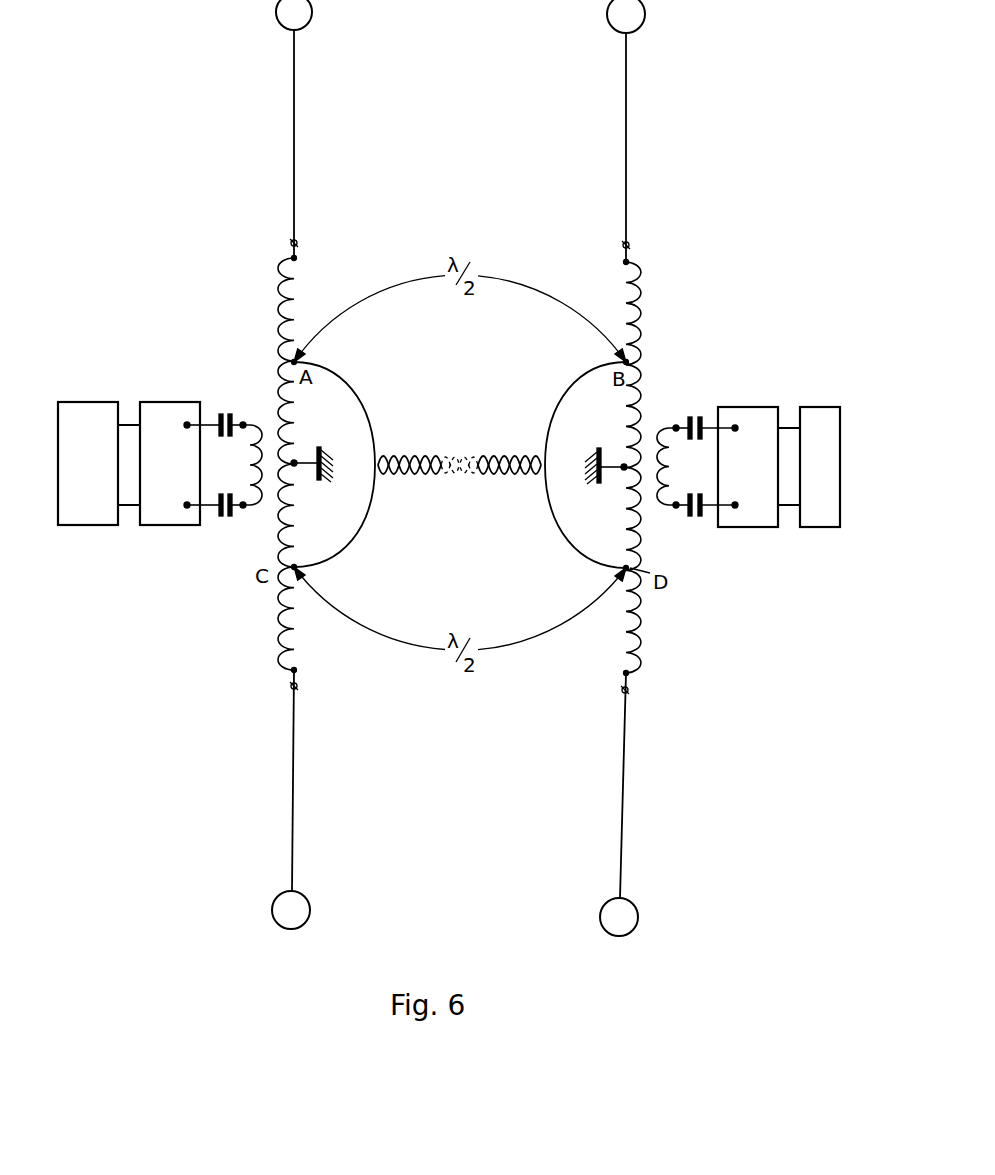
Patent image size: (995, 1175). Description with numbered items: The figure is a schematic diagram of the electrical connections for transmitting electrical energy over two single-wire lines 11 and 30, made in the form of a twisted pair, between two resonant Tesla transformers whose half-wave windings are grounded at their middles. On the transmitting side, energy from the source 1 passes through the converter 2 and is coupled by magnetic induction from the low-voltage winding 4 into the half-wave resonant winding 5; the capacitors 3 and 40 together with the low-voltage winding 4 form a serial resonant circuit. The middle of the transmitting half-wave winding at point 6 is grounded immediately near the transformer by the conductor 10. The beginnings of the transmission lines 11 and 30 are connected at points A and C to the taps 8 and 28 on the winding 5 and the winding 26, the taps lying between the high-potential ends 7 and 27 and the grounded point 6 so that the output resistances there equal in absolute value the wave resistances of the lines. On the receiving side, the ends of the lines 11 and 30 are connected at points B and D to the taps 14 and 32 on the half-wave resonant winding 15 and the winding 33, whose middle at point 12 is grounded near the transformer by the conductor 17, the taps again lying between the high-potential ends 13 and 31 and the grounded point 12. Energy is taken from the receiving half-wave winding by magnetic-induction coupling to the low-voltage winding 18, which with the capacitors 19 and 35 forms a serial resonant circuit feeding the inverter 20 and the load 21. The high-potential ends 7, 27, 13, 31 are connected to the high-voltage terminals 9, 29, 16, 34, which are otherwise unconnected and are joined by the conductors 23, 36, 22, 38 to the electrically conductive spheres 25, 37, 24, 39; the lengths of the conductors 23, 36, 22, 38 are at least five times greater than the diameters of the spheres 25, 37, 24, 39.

The source of energy 1 is at (86, 402).
The converter 2 is at (163, 402).
The capacitor 3 is at (225, 412).
The low-voltage winding 4 is at (250, 510).
The half-wave resonant winding 5 is at (296, 415).
The middle point of half-wave winding 6 is at (310, 455).
The high-potential terminal 7 is at (294, 258).
The tap 8 is at (296, 362).
The high-voltage terminal 9 is at (300, 241).
The grounding conductor 10 is at (305, 466).
The single-wire transmission line 11 is at (370, 400).
The middle point of half-wave winding 12 is at (622, 464).
The high-potential terminal 13 is at (626, 262).
The tap 14 is at (620, 359).
The half-wave resonant winding 15 is at (626, 395).
The high-voltage terminal 16 is at (622, 245).
The grounding conductor 17 is at (618, 470).
The low-voltage winding 18 is at (665, 478).
The capacitor 19 is at (697, 413).
The inverter 20 is at (750, 407).
The load 21 is at (818, 407).
The conductor 22 is at (624, 130).
The conductor 23 is at (296, 127).
The electrically conductive sphere 24 is at (612, 28).
The electrically conductive sphere 25 is at (311, 26).
The winding 26 is at (290, 565).
The high-potential terminal 27 is at (294, 668).
The tap 28 is at (300, 572).
The high-voltage terminal 29 is at (298, 688).
The single-wire transmission line 30 is at (352, 553).
The high-potential terminal 31 is at (622, 672).
The tap 32 is at (616, 578).
The winding 33 is at (626, 547).
The high-voltage terminal 34 is at (620, 691).
The capacitor 35 is at (697, 520).
The conductor 36 is at (294, 772).
The electrically conductive sphere 37 is at (306, 894).
The conductor 38 is at (621, 786).
The electrically conductive sphere 39 is at (608, 898).
The capacitor 40 is at (228, 518).